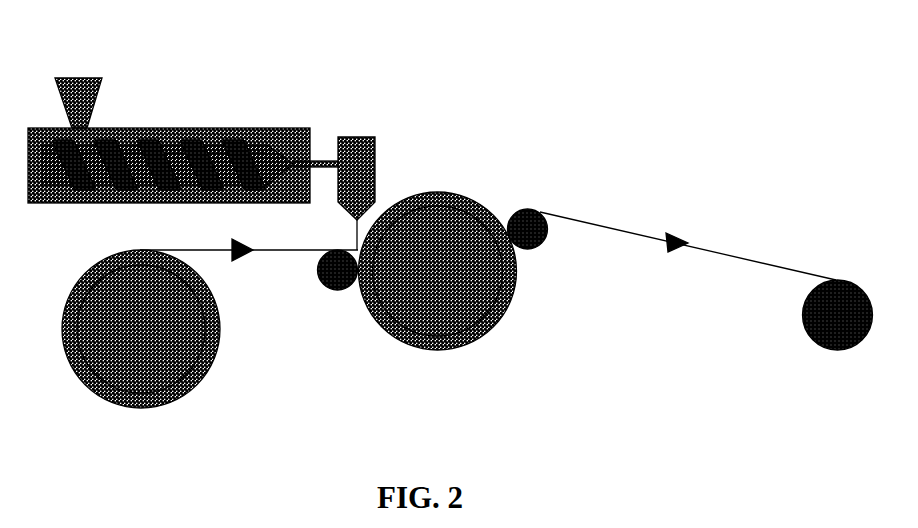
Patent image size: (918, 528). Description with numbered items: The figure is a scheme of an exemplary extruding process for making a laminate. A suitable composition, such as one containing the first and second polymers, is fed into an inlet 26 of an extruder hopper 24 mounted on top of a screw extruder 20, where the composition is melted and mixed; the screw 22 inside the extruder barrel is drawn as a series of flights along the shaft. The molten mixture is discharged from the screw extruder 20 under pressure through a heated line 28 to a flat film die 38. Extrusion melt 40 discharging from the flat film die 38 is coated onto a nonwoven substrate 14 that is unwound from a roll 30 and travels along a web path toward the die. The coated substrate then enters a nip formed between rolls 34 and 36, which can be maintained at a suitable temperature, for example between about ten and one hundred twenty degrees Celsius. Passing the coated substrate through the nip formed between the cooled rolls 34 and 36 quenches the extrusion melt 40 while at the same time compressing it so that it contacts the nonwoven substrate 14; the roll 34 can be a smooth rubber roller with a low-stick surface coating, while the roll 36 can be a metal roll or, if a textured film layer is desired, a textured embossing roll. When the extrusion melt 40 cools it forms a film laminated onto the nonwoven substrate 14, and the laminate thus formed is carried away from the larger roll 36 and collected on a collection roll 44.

The nonwoven substrate 14 is at (488, 250).
The screw extruder 20 is at (257, 128).
The extruder screw 22 is at (167, 165).
The extruder hopper 24 is at (95, 103).
The inlet 26 is at (80, 78).
The heated line 28 is at (323, 158).
The roll 30 is at (200, 380).
The roll 34 is at (328, 290).
The roll 36 is at (487, 332).
The flat film die 38 is at (376, 167).
The extrusion melt 40 is at (355, 233).
The collection roll 44 is at (823, 347).